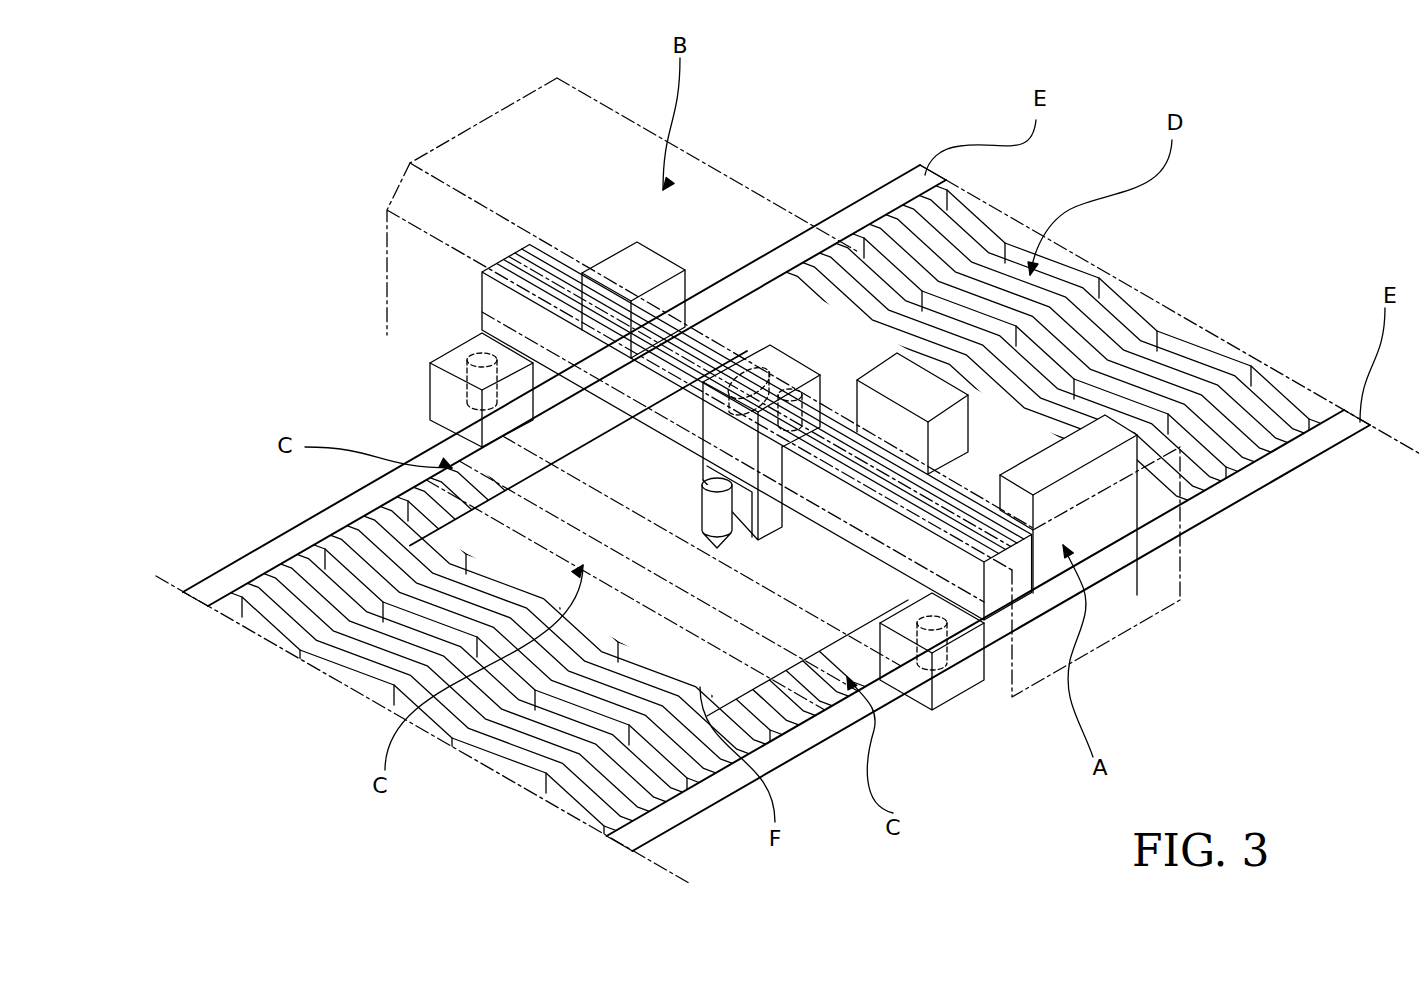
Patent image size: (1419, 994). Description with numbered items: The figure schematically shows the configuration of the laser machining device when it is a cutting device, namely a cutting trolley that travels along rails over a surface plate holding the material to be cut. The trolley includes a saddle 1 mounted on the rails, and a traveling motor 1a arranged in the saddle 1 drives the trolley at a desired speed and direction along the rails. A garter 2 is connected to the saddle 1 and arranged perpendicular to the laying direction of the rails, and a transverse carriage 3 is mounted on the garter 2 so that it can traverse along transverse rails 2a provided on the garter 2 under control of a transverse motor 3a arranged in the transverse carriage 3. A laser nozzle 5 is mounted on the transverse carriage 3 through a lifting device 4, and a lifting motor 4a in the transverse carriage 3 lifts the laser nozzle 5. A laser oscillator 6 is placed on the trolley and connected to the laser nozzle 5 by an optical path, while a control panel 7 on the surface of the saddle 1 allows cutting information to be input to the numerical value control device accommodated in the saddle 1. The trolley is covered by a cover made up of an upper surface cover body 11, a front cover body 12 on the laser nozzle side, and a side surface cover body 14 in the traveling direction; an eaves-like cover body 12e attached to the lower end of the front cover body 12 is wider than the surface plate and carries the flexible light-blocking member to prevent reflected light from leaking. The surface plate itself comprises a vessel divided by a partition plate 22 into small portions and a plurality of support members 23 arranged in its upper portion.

The saddle 1 is at (653, 557).
The traveling motor 1a is at (468, 353).
The garter 2 is at (683, 369).
The transverse rails 2a is at (510, 263).
The transverse carriage 3 is at (733, 405).
The transverse motor 3a is at (795, 408).
The lifting device 4 is at (745, 523).
The lifting motor 4a is at (725, 405).
The laser nozzle 5 is at (708, 505).
The laser oscillator 6 is at (955, 438).
The control panel 7 is at (1103, 523).
The upper surface cover body 11 is at (478, 155).
The front cover body 12 is at (403, 276).
The eaves-like cover body 12e is at (345, 497).
The side surface cover body 14 is at (1115, 627).
The partition plate 22 is at (1265, 425).
The support members 23 is at (1130, 317).